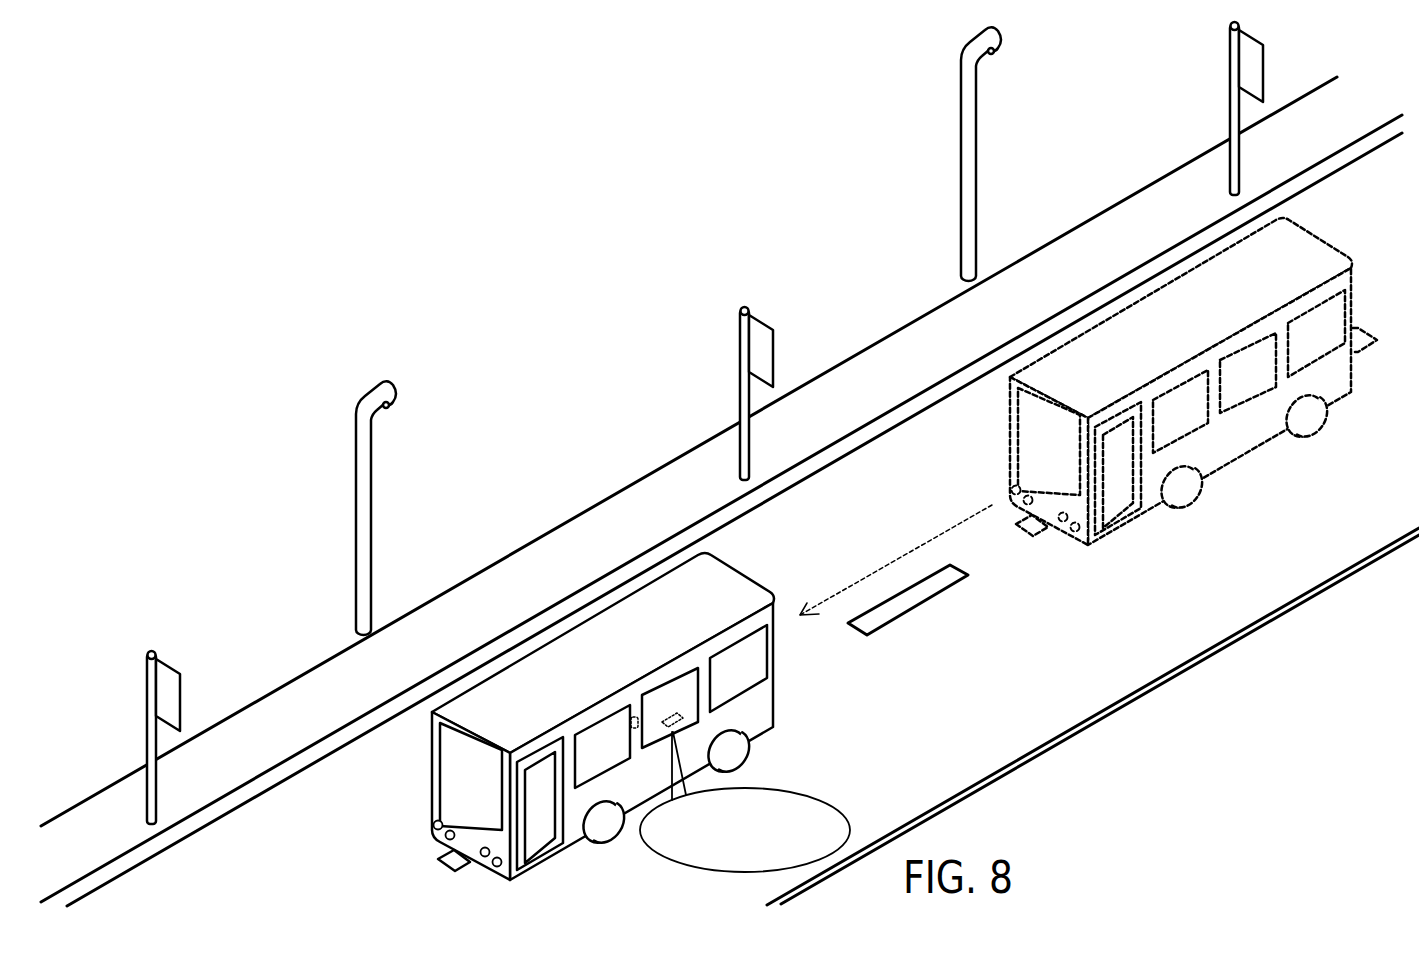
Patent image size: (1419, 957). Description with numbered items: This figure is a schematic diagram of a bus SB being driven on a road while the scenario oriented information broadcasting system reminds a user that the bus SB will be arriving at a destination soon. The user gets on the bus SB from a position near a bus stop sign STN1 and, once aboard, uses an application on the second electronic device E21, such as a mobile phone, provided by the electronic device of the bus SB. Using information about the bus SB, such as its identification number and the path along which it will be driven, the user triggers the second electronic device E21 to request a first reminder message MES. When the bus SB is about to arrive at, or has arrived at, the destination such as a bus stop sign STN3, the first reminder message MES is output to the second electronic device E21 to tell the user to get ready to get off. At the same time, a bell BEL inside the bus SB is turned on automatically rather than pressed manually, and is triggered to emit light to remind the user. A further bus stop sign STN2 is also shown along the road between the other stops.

The bus stop sign STN1 is at (1253, 67).
The second bus station STN2 is at (804, 391).
The bus stop sign STN3 is at (211, 735).
The bus SB is at (767, 698).
The bell BEL is at (628, 722).
The second electronic device E21 is at (666, 712).
The first reminder message MES is at (787, 788).